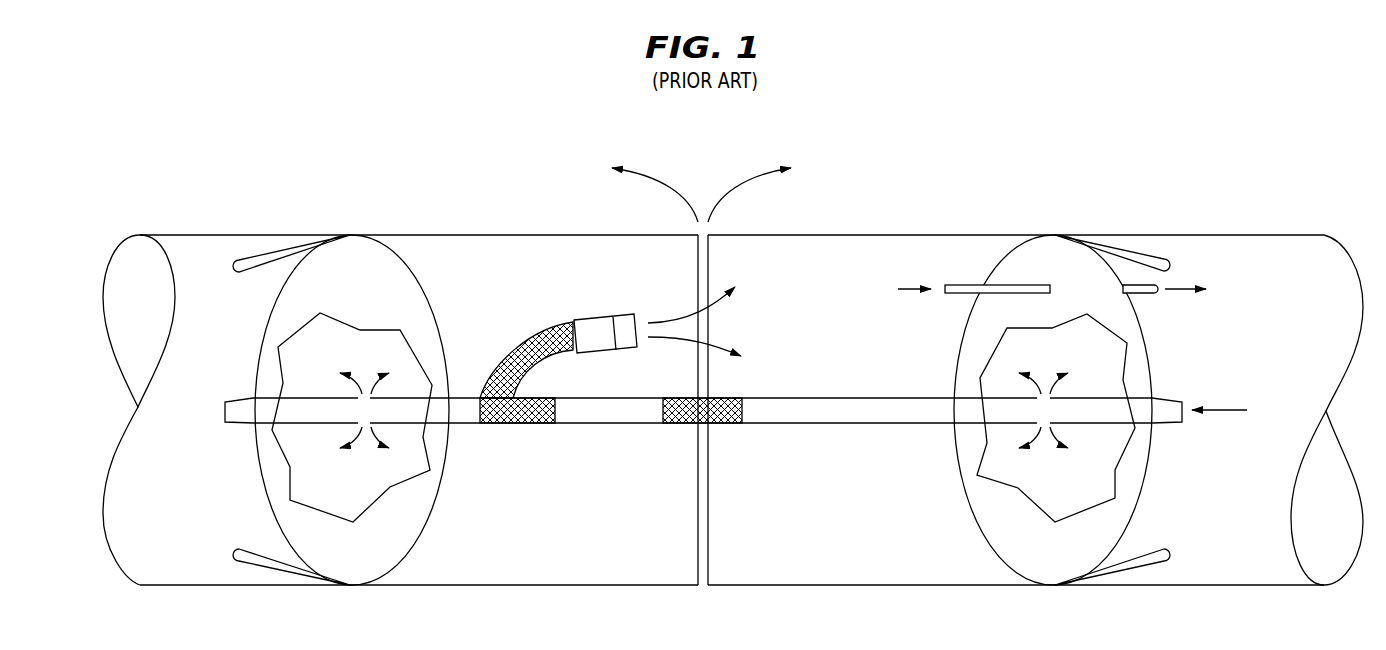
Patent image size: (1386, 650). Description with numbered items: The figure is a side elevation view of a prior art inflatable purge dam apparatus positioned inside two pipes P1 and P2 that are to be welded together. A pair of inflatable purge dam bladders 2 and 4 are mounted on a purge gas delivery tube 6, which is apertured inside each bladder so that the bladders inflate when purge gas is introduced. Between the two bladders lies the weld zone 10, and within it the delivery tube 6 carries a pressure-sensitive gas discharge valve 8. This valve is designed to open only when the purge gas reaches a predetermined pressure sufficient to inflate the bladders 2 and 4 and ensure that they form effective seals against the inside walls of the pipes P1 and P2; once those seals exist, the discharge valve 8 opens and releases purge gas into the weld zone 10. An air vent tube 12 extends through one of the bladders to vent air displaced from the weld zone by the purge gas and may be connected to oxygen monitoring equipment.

The inflatable purge dam bladder 2 is at (375, 263).
The inflatable purge dam bladder 4 is at (1018, 265).
The purge gas delivery tube 6 is at (815, 410).
The pressure-sensitive gas discharge valve 8 is at (597, 327).
The weld zone 10 is at (594, 509).
The air vent tube 12 is at (957, 293).
The pipe P1 is at (177, 235).
The pipe P2 is at (1264, 235).